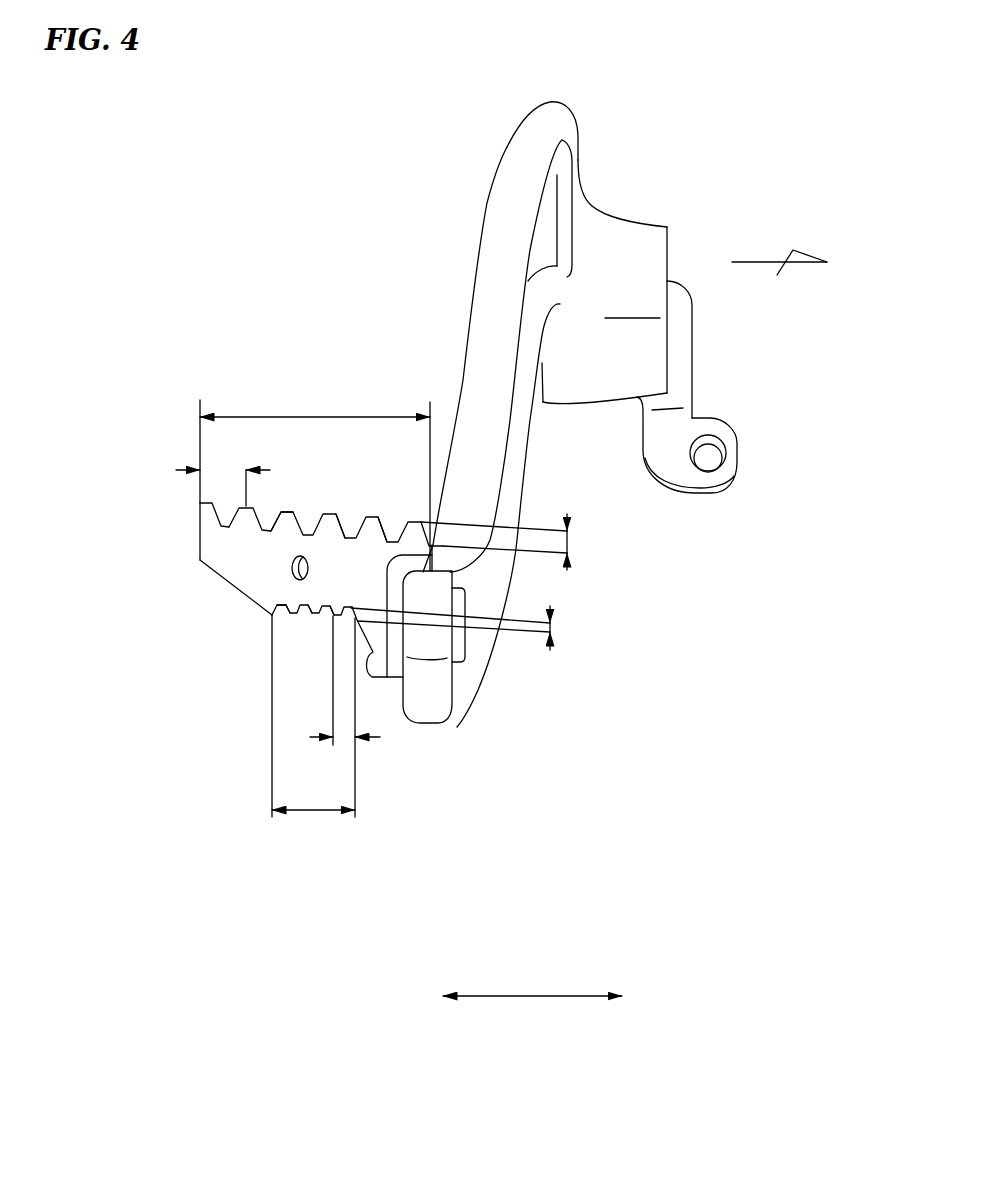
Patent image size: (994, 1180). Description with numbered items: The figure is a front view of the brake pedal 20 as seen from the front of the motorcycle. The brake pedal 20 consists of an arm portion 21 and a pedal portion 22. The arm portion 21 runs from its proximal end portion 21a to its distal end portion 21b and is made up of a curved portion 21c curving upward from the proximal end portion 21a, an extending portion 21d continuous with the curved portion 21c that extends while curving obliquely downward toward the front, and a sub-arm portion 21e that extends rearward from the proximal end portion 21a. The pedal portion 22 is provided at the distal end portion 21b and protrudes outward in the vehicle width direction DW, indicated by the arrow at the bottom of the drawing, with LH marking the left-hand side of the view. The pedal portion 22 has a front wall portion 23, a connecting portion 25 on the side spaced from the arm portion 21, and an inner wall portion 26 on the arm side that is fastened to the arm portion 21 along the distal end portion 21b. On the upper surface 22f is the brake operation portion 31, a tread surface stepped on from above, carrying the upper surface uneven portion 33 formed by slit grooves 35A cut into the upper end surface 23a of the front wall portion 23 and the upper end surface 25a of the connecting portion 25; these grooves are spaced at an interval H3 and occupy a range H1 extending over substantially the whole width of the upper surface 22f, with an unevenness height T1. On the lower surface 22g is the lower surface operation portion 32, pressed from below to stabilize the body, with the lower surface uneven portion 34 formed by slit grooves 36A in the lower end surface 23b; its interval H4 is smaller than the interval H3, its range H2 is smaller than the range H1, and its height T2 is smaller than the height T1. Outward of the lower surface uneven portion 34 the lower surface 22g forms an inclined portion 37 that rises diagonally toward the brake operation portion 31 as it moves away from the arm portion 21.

The brake pedal 20 is at (483, 202).
The arm portion 21 is at (475, 297).
The proximal end portion 21a is at (583, 195).
The distal end portion 21b is at (460, 697).
The curved portion 21c is at (537, 118).
The extending portion 21d is at (512, 580).
The sub-arm portion 21e is at (690, 427).
The pedal portion 22 is at (200, 520).
The upper surface 22f is at (268, 421).
The lower surface 22g is at (211, 698).
The front wall portion 23 is at (257, 582).
The upper end surface of the front wall portion 23a is at (328, 510).
The lower end surface of the front wall portion 23b is at (268, 613).
The connecting portion 25 is at (200, 540).
The upper end surface of the connecting portion 25a is at (204, 501).
The inner wall portion 26 is at (378, 677).
The brake operation portion 31 is at (278, 505).
The lower surface operation portion 32 is at (287, 619).
The upper surface uneven portion 33 is at (388, 510).
The lower surface uneven portion 34 is at (327, 616).
The slit groove 35A is at (349, 510).
The slit groove 36A is at (303, 614).
The inclined portion 37 is at (234, 585).
The range of the upper surface uneven portion H1 is at (332, 412).
The range of the lower surface uneven portion H2 is at (317, 817).
The interval of the upper slit grooves H3 is at (218, 470).
The interval of the lower slit grooves H4 is at (337, 742).
The unevenness height dimension of the upper surface uneven portion T1 is at (571, 543).
The unevenness height dimension of the lower surface uneven portion T2 is at (552, 637).
The vehicle width direction DW is at (532, 982).
The left-hand direction LH is at (779, 246).